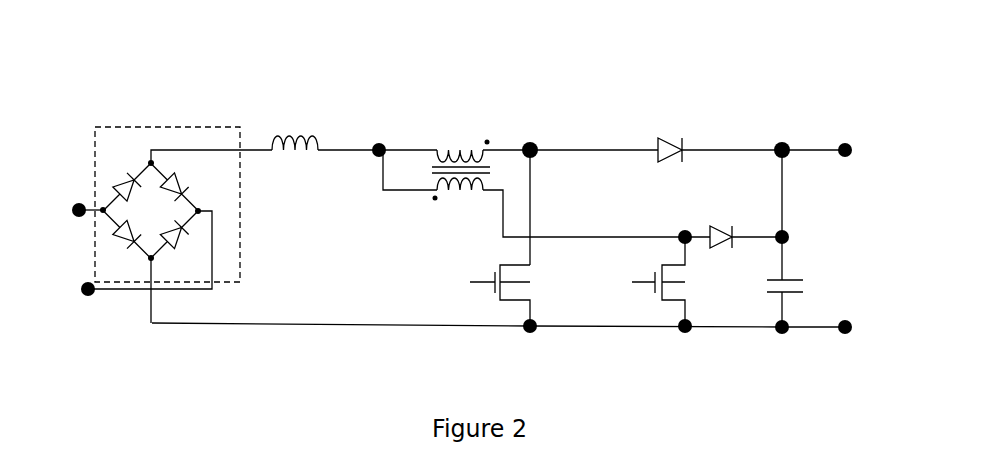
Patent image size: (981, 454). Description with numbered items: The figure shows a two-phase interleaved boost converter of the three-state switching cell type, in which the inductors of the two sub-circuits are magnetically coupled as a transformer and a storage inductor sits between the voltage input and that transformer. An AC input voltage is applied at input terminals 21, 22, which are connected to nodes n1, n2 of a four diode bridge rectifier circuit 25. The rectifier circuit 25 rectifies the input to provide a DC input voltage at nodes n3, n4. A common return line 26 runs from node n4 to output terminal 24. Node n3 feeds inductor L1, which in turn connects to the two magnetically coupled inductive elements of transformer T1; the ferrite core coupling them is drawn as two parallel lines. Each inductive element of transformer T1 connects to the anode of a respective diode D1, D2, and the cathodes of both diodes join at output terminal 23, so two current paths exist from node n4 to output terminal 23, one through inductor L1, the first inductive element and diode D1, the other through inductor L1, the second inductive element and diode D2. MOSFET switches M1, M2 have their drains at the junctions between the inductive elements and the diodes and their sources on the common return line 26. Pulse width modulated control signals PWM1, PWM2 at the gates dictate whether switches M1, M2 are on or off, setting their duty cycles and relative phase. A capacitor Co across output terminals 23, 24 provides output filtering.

The input terminal 21 is at (82, 205).
The input terminal 22 is at (88, 289).
The output terminal 23 is at (845, 147).
The output terminal 24 is at (845, 327).
The four diode bridge rectifier circuit 25 is at (161, 156).
The common return line 26 is at (312, 323).
The node of the rectifier circuit n1 is at (96, 226).
The node of the rectifier circuit n2 is at (211, 198).
The node of the rectifier circuit n3 is at (133, 151).
The node of the rectifier circuit n4 is at (164, 268).
The inductor L1 is at (295, 124).
The transformer T1 is at (461, 152).
The first diode D1 is at (719, 129).
The second diode D2 is at (730, 220).
The MOSFET switch M1 is at (500, 313).
The MOSFET switch M2 is at (658, 299).
The capacitor Co is at (802, 238).
The pulse width modulated control signal PWM1 is at (435, 283).
The pulse width modulated control signal PWM2 is at (589, 285).